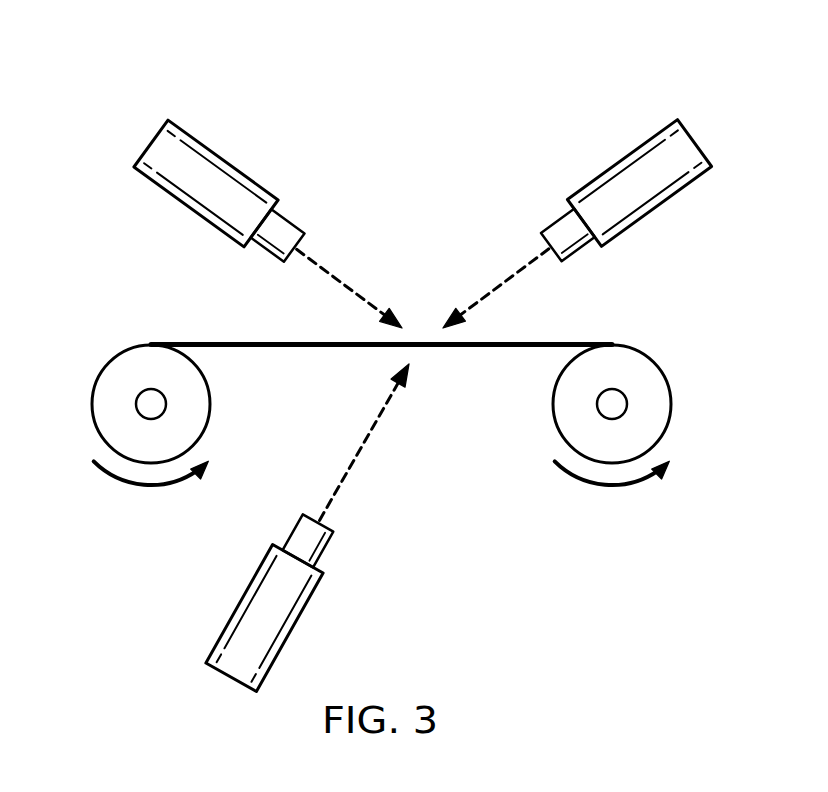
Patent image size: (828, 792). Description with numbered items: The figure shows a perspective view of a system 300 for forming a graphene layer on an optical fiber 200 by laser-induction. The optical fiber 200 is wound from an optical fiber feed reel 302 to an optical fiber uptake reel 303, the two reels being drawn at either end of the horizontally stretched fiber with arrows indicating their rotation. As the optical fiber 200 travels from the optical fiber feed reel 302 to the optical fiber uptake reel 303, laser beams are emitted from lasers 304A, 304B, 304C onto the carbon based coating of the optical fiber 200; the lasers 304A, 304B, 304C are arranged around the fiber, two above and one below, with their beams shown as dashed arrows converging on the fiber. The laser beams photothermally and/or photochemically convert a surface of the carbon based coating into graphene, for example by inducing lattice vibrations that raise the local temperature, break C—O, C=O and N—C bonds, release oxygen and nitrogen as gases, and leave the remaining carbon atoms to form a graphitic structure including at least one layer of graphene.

The system 300 is at (486, 96).
The optical fiber 200 is at (243, 328).
The optical fiber feed reel 302 is at (90, 403).
The optical fiber uptake reel 303 is at (673, 402).
The laser 304A is at (223, 158).
The laser 304B is at (622, 158).
The laser 304C is at (238, 602).